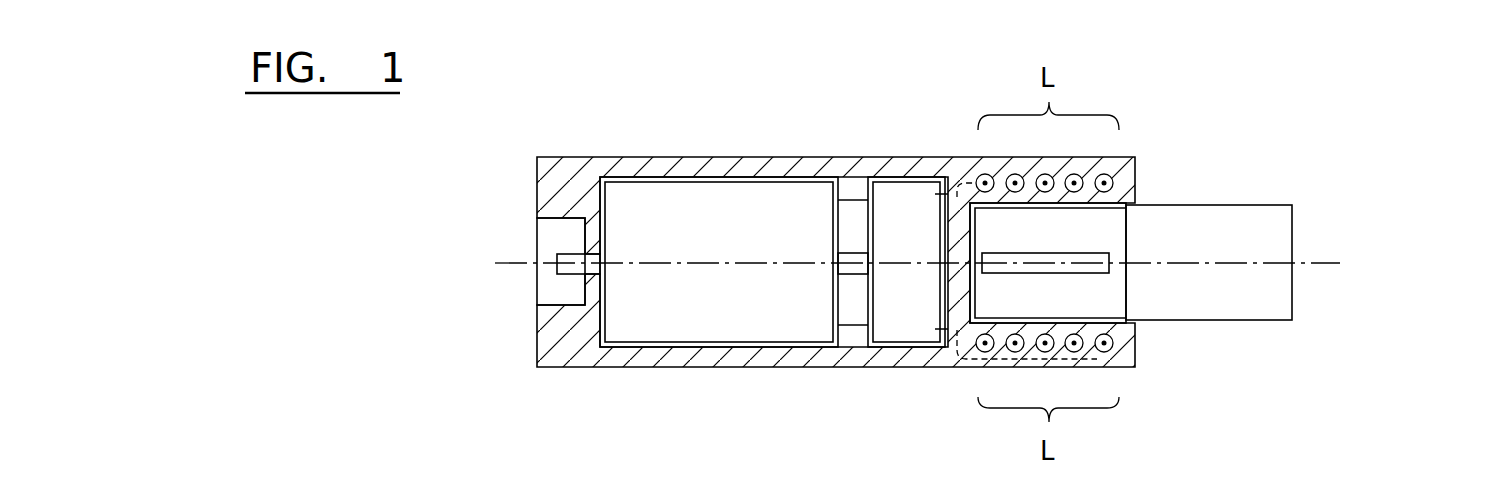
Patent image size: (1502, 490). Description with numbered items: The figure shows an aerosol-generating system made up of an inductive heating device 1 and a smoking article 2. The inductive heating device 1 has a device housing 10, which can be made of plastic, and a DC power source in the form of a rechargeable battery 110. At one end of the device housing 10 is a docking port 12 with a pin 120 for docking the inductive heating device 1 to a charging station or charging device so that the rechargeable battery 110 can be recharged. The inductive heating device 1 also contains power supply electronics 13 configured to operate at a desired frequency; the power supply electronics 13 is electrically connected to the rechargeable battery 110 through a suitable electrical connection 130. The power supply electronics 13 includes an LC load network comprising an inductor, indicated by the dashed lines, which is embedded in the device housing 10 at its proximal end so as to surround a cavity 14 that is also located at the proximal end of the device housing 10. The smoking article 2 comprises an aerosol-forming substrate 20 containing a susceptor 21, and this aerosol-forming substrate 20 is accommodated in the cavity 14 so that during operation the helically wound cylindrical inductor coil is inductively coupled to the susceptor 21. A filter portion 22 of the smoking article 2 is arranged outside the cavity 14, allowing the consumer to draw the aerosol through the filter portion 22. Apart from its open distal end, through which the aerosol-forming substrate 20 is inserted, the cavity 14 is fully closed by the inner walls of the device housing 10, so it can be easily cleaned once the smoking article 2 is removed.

The inductive heating device 1 is at (738, 125).
The device housing 10 is at (855, 177).
The docking port 12 is at (528, 248).
The pin 120 is at (557, 268).
The rechargeable battery 110 is at (670, 313).
The electrical connection 130 is at (855, 268).
The power supply electronics 13 is at (905, 325).
The cavity 14 is at (1143, 325).
The smoking article 2 is at (1327, 207).
The aerosol-forming substrate 20 is at (1113, 233).
The susceptor 21 is at (1113, 268).
The filter portion 22 is at (1242, 227).